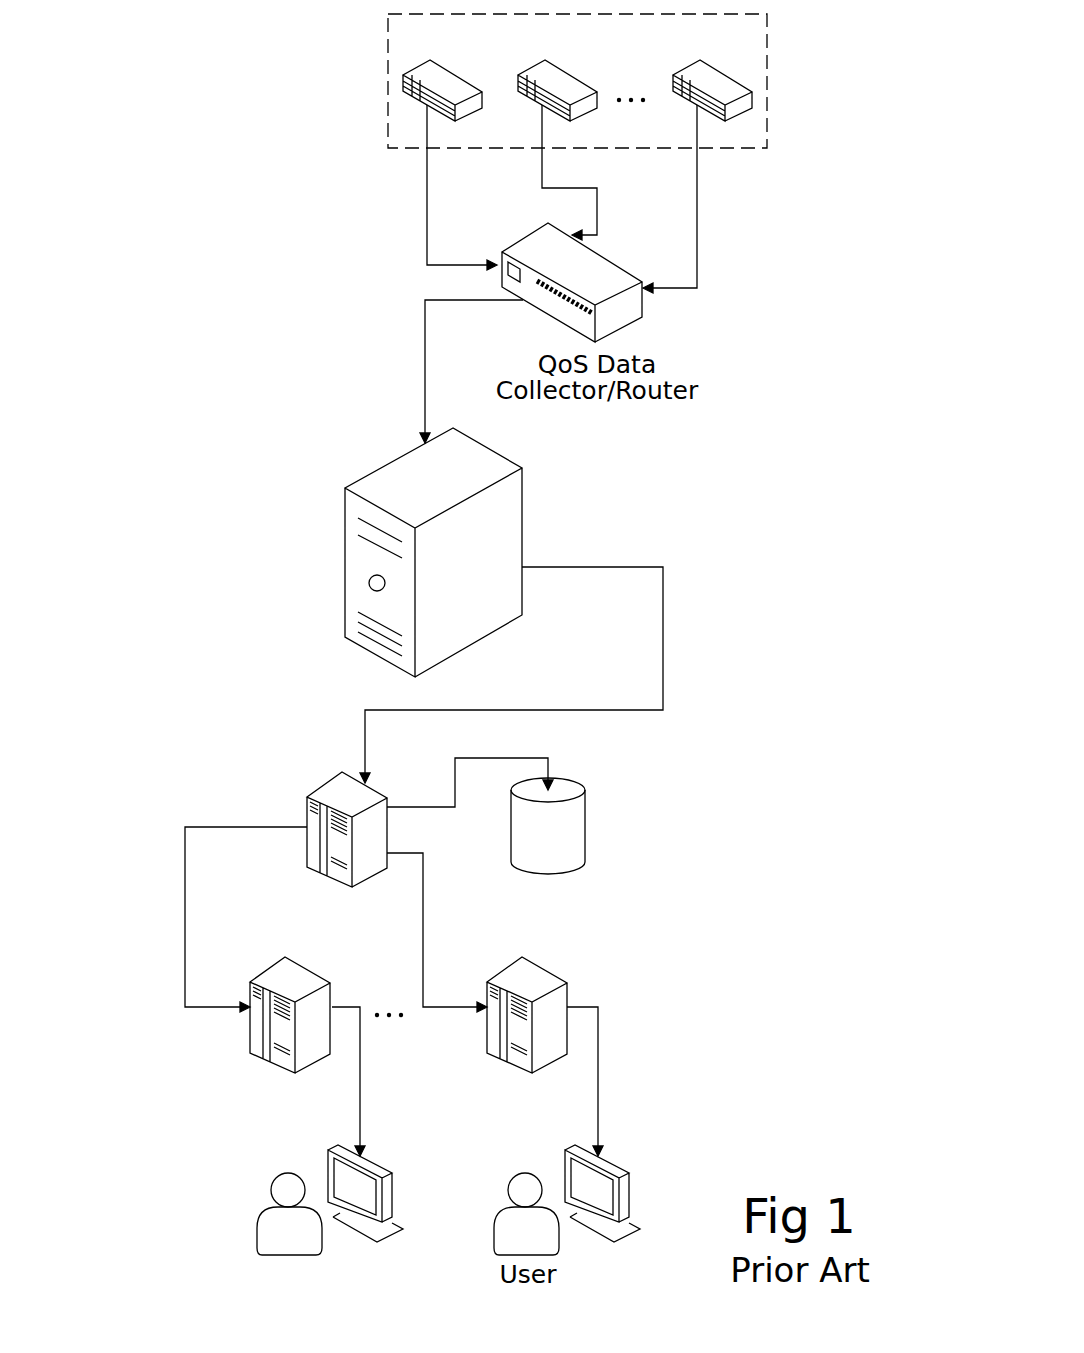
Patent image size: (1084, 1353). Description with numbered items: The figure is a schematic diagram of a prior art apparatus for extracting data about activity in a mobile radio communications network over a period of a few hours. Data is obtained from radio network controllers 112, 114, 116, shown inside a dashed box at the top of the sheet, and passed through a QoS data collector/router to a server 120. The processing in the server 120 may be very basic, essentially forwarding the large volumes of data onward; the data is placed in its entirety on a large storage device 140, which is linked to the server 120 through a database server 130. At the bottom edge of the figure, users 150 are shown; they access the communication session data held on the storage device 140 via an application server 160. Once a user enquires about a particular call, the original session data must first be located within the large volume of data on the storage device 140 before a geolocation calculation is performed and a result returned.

The radio network controller 112 is at (405, 97).
The radio network controller 114 is at (520, 97).
The radio network controller 116 is at (675, 97).
The server 120 is at (522, 500).
The database server 130 is at (310, 795).
The storage device 140 is at (567, 777).
The users 150 is at (262, 1212).
The application server 160 is at (250, 1025).